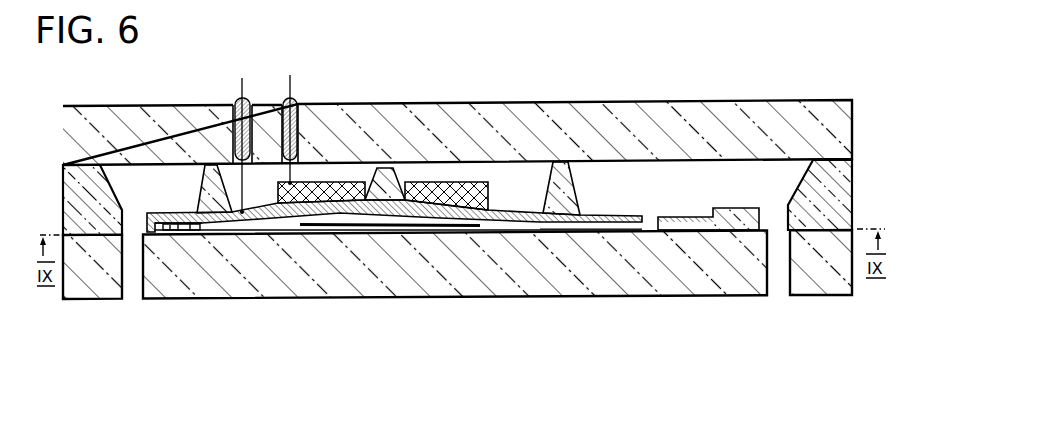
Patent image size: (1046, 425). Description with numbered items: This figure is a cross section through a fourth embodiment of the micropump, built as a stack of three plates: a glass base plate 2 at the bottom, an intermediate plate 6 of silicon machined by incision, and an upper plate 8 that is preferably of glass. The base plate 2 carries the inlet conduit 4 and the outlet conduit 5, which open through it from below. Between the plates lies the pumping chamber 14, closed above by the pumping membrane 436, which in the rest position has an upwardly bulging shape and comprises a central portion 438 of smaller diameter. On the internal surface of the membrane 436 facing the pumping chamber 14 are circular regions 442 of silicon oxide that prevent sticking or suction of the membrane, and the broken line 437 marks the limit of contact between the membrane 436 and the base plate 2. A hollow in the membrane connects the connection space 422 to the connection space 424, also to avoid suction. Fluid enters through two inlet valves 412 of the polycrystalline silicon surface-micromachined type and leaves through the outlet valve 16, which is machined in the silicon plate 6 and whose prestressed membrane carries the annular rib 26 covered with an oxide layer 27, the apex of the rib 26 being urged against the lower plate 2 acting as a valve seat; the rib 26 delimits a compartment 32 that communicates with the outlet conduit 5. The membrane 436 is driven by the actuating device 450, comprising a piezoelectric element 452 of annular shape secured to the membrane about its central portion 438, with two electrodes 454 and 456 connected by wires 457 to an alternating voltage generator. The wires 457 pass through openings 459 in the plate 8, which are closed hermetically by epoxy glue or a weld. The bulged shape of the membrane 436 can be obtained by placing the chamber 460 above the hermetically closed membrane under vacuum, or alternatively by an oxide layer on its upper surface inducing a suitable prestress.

The base plate 2 is at (547, 263).
The inlet channel 4 is at (133, 279).
The outlet conduit 5 is at (780, 284).
The intermediate plate 6 is at (845, 190).
The upper plate 8 is at (757, 127).
The pumping chamber 14 is at (380, 237).
The outlet valve 16 is at (650, 237).
The annular rib 26 is at (660, 217).
The oxide layer 27 is at (666, 238).
The compartment 32 is at (644, 178).
The inlet valve 412 is at (183, 238).
The connection space 422 is at (212, 237).
The connection space 424 is at (617, 237).
The pumping membrane 436 is at (447, 235).
The broken line 437 is at (488, 235).
The central portion 438 is at (383, 168).
The circular regions 442 is at (352, 237).
The actuating device 450 is at (433, 176).
The piezoelectric element 452 is at (464, 186).
The electrode 454 is at (303, 181).
The electrode 456 is at (242, 210).
The wires 457 is at (286, 96).
The openings 459 is at (291, 182).
The chamber 460 is at (520, 181).